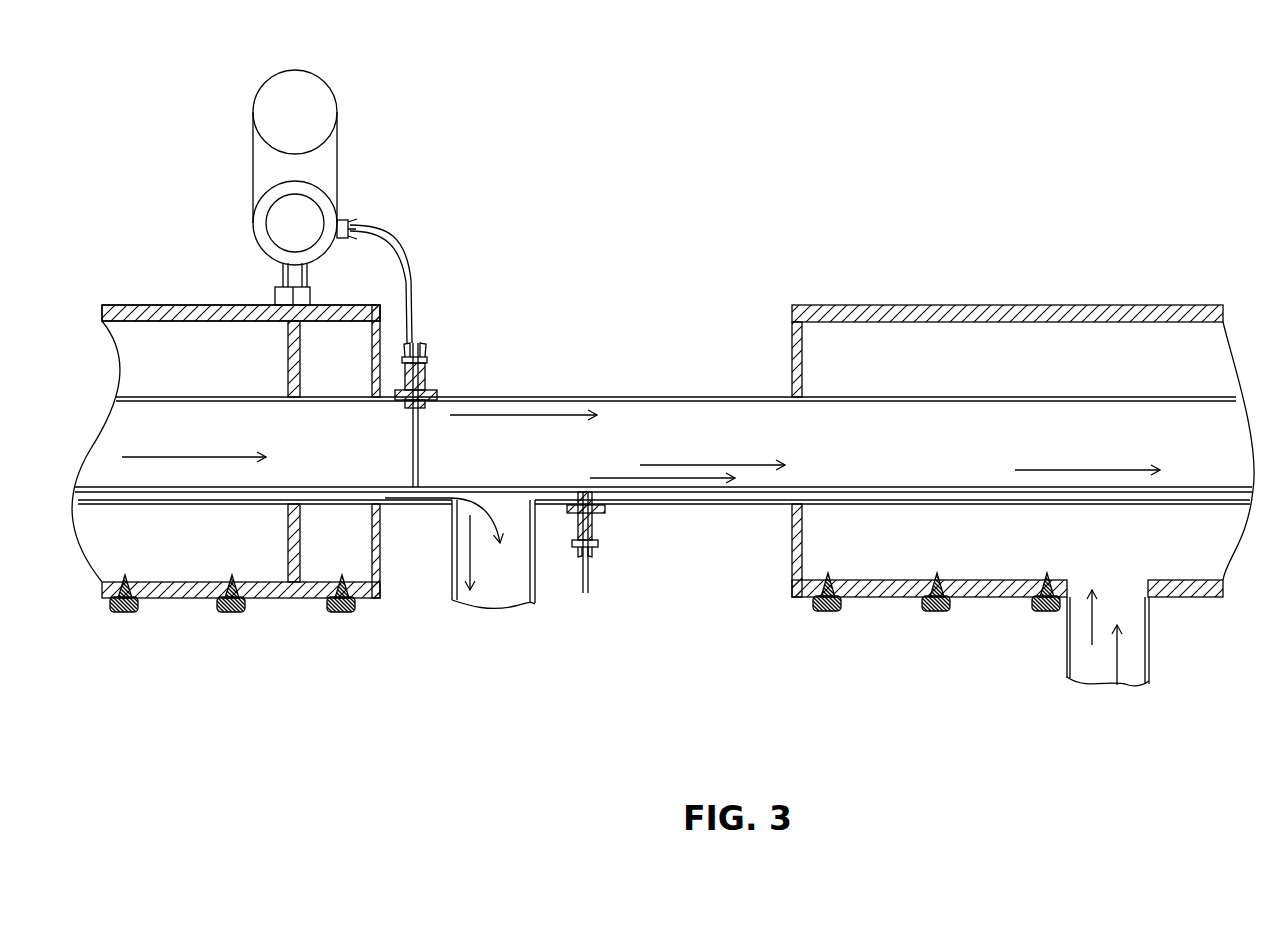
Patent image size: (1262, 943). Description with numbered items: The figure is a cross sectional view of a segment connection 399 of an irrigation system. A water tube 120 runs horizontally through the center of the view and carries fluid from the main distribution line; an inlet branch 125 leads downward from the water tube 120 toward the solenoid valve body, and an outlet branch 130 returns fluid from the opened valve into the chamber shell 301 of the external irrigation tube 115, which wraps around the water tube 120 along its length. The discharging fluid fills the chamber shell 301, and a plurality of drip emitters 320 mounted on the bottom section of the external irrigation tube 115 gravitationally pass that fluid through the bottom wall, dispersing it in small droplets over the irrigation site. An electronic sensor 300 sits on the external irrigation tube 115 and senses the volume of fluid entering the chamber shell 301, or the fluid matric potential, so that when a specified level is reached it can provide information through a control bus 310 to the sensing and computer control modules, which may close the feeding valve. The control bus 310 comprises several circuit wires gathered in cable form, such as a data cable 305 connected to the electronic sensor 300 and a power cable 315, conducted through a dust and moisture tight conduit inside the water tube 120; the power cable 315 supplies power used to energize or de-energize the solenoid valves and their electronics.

The external irrigation tube 115 is at (205, 303).
The water tube 120 is at (685, 398).
The inlet branch 125 is at (451, 583).
The outlet branch 130 is at (1152, 672).
The electronic sensor 300 is at (296, 70).
The chamber shell 301 is at (138, 383).
The data cable 305 is at (413, 275).
The control bus 310 is at (412, 462).
The power cable 315 is at (590, 585).
The drip emitters 320 is at (122, 576).
The segment connection 399 is at (960, 50).